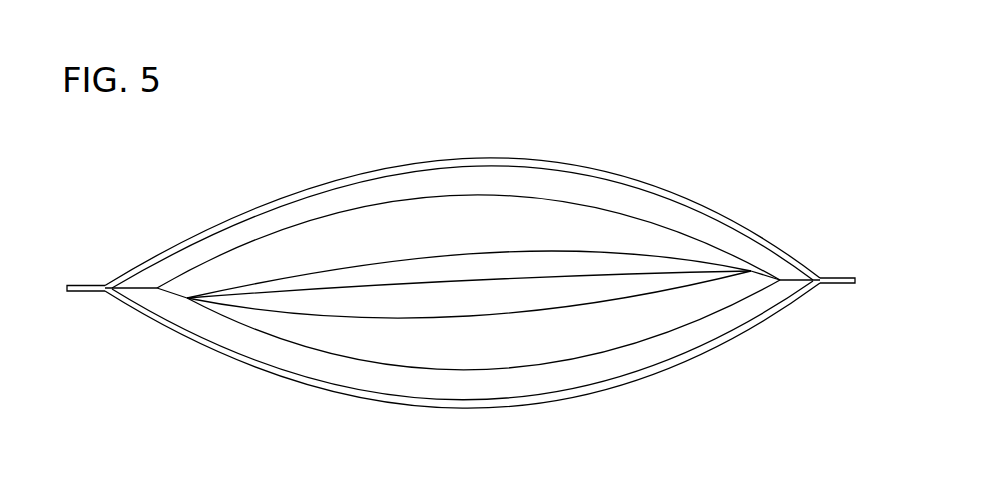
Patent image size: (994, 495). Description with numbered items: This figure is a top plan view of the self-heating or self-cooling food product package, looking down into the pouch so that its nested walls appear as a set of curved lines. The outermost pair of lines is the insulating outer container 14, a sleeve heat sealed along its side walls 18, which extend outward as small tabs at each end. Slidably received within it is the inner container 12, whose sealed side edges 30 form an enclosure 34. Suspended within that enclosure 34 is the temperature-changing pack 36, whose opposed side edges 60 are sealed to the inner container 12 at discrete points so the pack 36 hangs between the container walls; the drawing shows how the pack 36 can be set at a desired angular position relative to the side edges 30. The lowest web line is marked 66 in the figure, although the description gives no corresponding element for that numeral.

The inner container 12 is at (274, 226).
The outer container 14 is at (206, 215).
The side walls 18 is at (88, 283).
The side edges 30 is at (292, 263).
The enclosure 34 is at (503, 222).
The temperature-changing pack 36 is at (443, 268).
The side edges 60 is at (193, 308).
The lower middle web 66 is at (480, 302).